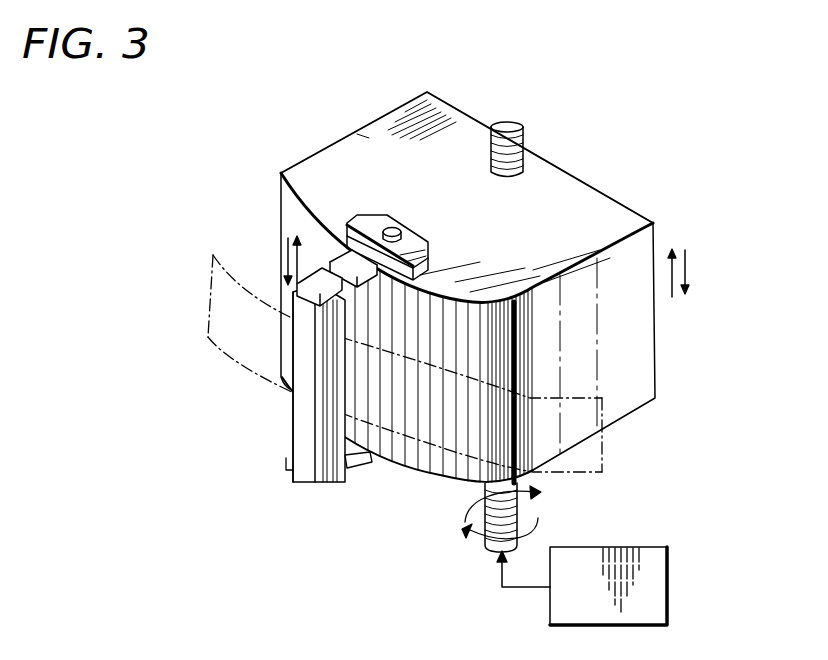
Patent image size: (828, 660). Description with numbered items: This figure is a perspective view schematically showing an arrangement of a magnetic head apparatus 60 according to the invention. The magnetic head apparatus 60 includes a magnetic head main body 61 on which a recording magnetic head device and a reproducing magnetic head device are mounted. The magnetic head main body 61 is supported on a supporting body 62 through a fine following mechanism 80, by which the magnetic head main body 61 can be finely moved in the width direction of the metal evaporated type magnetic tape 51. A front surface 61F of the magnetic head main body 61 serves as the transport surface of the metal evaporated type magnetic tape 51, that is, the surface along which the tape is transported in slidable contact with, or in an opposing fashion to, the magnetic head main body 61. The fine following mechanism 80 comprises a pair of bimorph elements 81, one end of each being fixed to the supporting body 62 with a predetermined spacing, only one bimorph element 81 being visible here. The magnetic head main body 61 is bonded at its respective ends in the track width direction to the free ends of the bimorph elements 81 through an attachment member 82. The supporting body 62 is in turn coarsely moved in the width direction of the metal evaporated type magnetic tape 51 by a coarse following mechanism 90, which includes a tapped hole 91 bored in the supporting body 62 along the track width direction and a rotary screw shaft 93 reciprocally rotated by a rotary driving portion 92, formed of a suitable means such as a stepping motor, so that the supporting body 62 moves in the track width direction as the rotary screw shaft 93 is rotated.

The magnetic head apparatus 60 is at (607, 62).
The supporting body 62 is at (640, 348).
The tapped hole 91 is at (452, 112).
The rotary screw shaft 93 is at (509, 121).
The fine following mechanism 80 is at (253, 70).
The bimorph element 81 is at (350, 222).
The attachment member 82 is at (320, 262).
The magnetic head main body 61 is at (267, 419).
The front surface 61F is at (298, 433).
The metal evaporated type magnetic tape 51 is at (603, 448).
The coarse following mechanism 90 is at (631, 561).
The rotary driving portion 92 is at (667, 585).